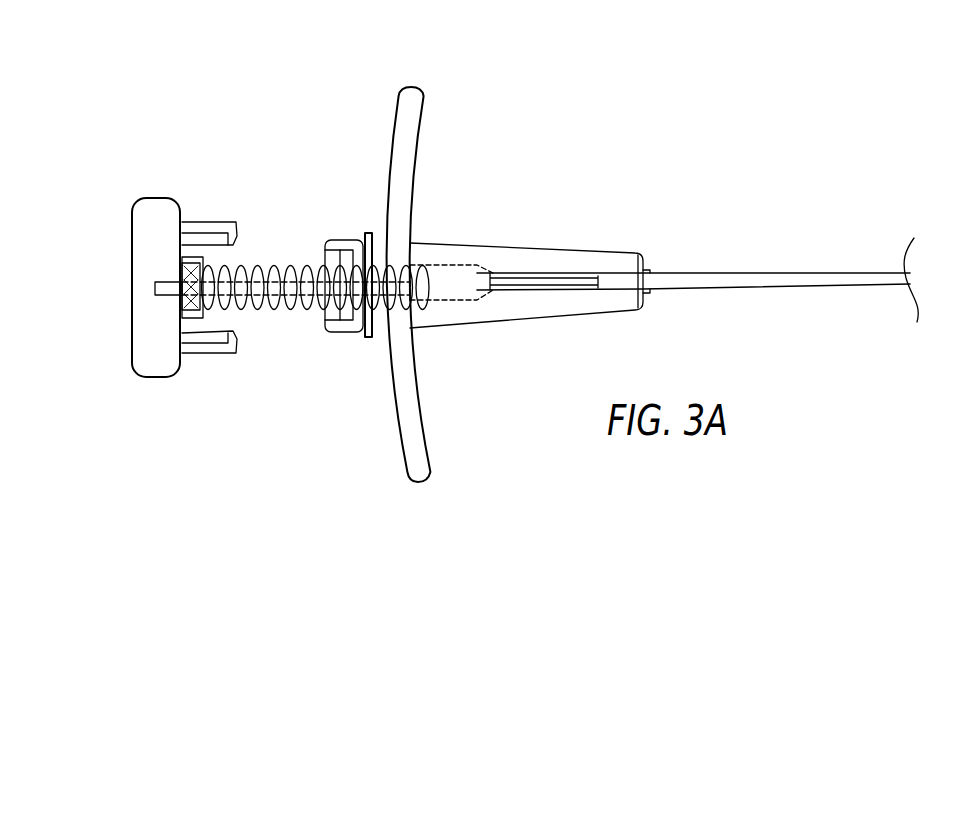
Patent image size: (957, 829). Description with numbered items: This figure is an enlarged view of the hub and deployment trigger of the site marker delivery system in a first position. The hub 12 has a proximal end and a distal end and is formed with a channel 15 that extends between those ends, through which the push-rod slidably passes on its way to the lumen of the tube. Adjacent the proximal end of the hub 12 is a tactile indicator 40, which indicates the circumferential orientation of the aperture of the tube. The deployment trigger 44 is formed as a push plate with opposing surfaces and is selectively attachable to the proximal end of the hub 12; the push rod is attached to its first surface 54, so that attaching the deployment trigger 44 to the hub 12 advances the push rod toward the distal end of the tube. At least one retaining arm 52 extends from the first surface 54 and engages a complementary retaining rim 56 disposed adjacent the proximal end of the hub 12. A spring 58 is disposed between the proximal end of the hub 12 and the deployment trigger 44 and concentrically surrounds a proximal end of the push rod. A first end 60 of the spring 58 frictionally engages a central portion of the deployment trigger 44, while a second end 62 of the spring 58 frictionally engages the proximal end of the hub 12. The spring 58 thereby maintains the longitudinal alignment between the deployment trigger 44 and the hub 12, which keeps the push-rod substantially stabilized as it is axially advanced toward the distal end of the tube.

The hub 12 is at (547, 245).
The channel 15 is at (596, 279).
The tactile indicator 40 is at (423, 107).
The deployment trigger 44 is at (133, 236).
The retaining arm 52 is at (207, 227).
The first surface 54 is at (183, 248).
The retaining rim 56 is at (365, 334).
The spring 58 is at (272, 309).
The first end of the spring 60 is at (192, 318).
The second end of the spring 62 is at (372, 262).